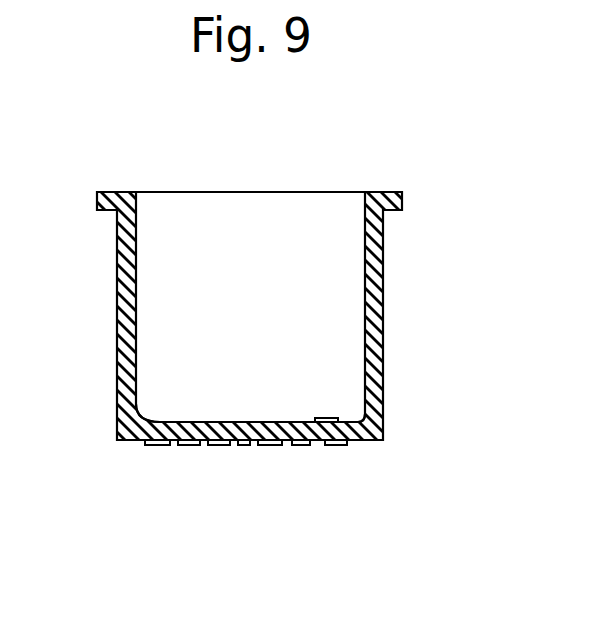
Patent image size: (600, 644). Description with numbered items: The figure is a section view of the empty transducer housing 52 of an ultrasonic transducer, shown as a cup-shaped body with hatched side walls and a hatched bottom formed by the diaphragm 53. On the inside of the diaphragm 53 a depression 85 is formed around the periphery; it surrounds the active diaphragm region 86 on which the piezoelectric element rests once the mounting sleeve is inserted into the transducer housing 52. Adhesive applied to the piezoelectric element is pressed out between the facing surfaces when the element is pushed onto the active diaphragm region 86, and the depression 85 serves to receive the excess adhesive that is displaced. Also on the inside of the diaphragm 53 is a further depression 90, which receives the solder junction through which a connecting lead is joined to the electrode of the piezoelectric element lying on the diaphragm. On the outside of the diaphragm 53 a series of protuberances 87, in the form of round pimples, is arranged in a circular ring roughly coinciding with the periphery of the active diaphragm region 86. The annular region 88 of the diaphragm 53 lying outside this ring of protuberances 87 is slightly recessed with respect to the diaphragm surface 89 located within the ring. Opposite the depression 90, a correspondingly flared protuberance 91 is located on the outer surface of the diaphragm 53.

The transducer housing 52 is at (117, 285).
The depression 85 is at (125, 403).
The active diaphragm region 86 is at (253, 421).
The depression 90 is at (328, 418).
The protuberances 87 is at (203, 446).
The diaphragm 53 is at (235, 446).
The diaphragm surface 89 is at (267, 446).
The flared protuberance 91 is at (335, 444).
The annular region 88 is at (370, 443).